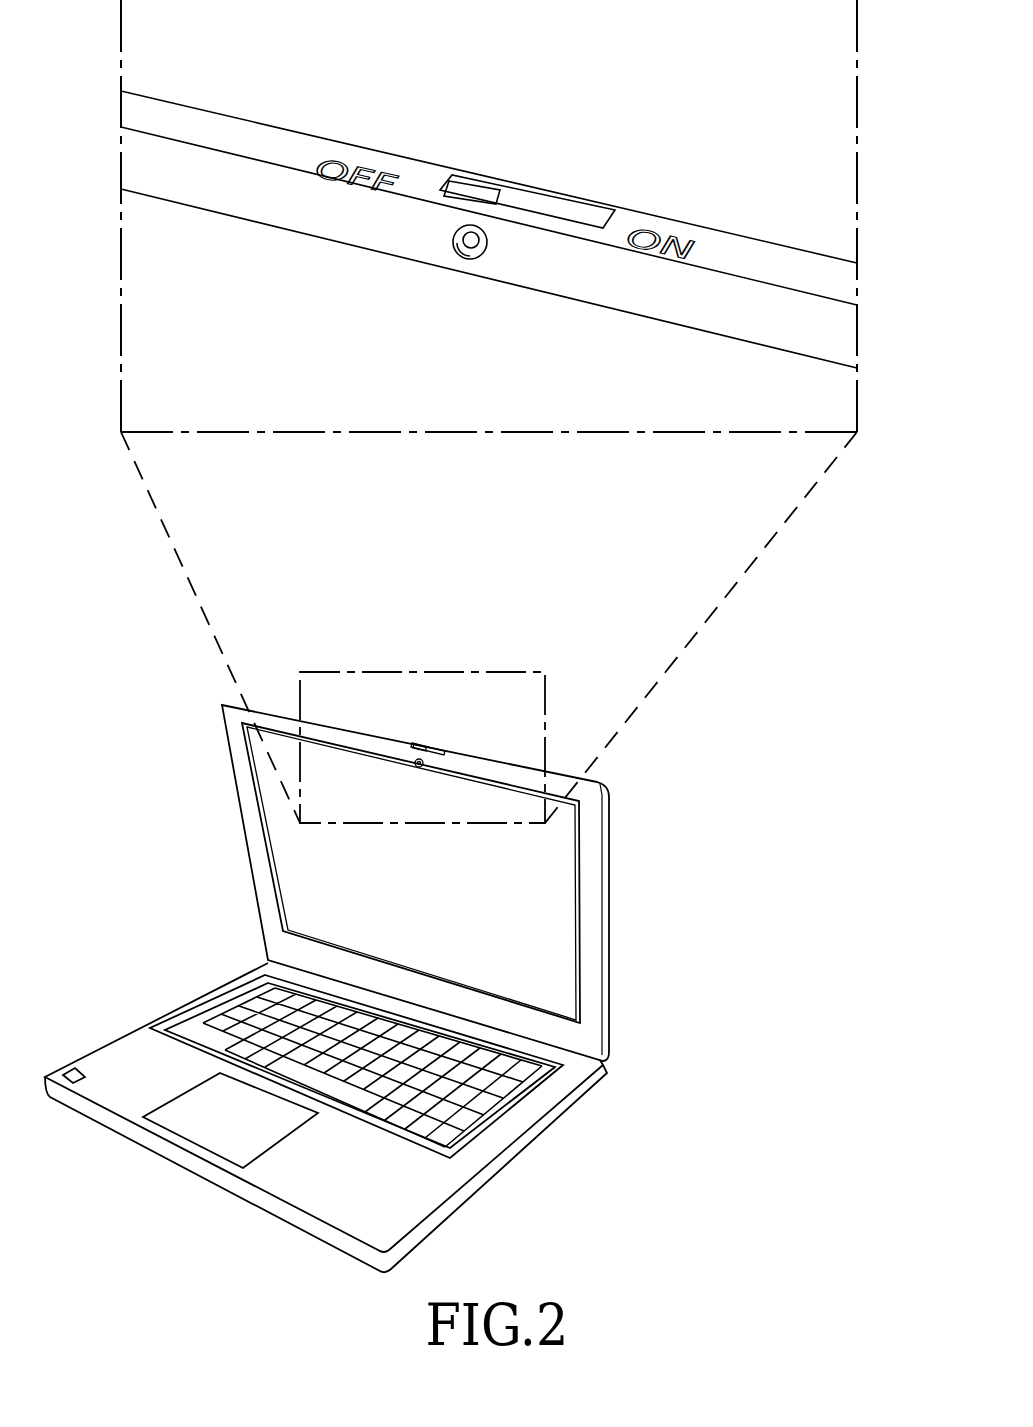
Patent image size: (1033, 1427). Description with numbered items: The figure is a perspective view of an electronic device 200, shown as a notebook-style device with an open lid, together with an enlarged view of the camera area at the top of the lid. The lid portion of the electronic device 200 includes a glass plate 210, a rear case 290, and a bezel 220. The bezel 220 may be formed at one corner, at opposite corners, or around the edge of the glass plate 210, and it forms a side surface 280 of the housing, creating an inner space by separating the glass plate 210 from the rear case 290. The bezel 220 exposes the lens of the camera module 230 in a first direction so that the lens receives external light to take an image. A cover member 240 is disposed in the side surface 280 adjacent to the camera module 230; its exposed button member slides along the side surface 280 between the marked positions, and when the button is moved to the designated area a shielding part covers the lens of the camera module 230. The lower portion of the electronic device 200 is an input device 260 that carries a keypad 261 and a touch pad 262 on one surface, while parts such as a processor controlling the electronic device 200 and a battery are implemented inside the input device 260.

The electronic device 200 is at (606, 774).
The glass plate 210 is at (549, 970).
The bezel 220 is at (591, 930).
The camera module 230 is at (452, 242).
The cover member 240 is at (548, 207).
The input device 260 is at (558, 1079).
The keypad 261 is at (347, 1095).
The touch pad 262 is at (217, 1133).
The side surface 280 is at (540, 768).
The rear case 290 is at (462, 883).